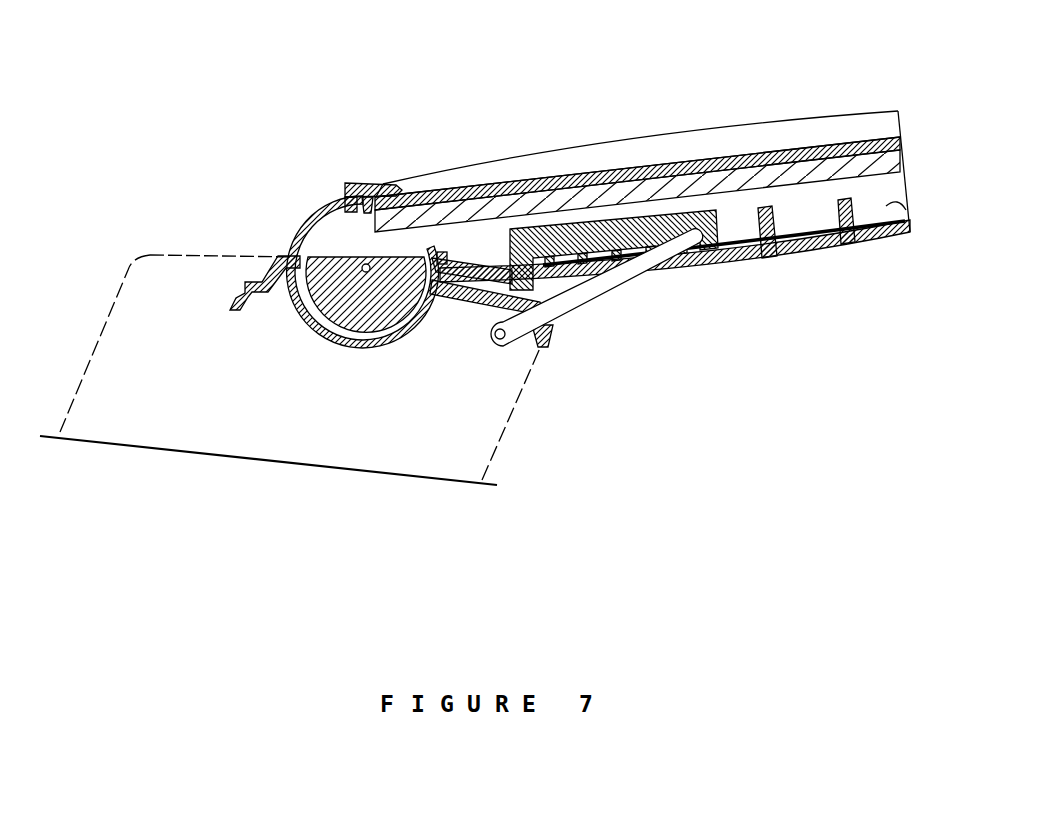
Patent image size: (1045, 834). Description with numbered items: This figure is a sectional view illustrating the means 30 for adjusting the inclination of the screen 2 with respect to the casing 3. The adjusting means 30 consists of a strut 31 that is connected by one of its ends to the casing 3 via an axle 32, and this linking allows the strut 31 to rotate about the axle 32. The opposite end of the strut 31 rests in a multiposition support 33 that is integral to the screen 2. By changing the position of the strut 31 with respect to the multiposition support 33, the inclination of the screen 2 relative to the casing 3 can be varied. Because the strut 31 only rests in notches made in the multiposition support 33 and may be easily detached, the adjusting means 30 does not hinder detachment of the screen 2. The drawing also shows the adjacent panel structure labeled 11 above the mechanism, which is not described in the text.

The screen 2 is at (903, 230).
The casing 3 is at (115, 412).
The glass panel 11 is at (863, 123).
The means for adjusting the inclination 30 is at (622, 311).
The strut 31 is at (587, 298).
The axle 32 is at (493, 336).
The multiposition support 33 is at (590, 222).